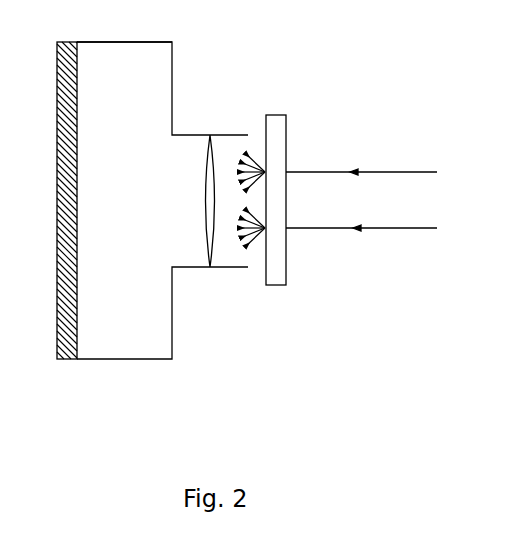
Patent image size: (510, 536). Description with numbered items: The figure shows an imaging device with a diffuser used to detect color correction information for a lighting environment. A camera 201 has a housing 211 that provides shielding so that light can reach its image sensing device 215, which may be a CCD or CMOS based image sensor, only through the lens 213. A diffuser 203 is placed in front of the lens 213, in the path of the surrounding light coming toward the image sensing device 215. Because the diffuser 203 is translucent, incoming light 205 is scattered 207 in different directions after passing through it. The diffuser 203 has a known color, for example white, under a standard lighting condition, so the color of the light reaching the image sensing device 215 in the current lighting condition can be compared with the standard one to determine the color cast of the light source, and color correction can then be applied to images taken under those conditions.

The camera 201 is at (155, 361).
The diffuser 203 is at (287, 142).
The light 205 is at (393, 170).
The scattered light 207 is at (262, 160).
The housing 211 is at (112, 42).
The lens 213 is at (202, 185).
The image sensing device 215 is at (78, 117).